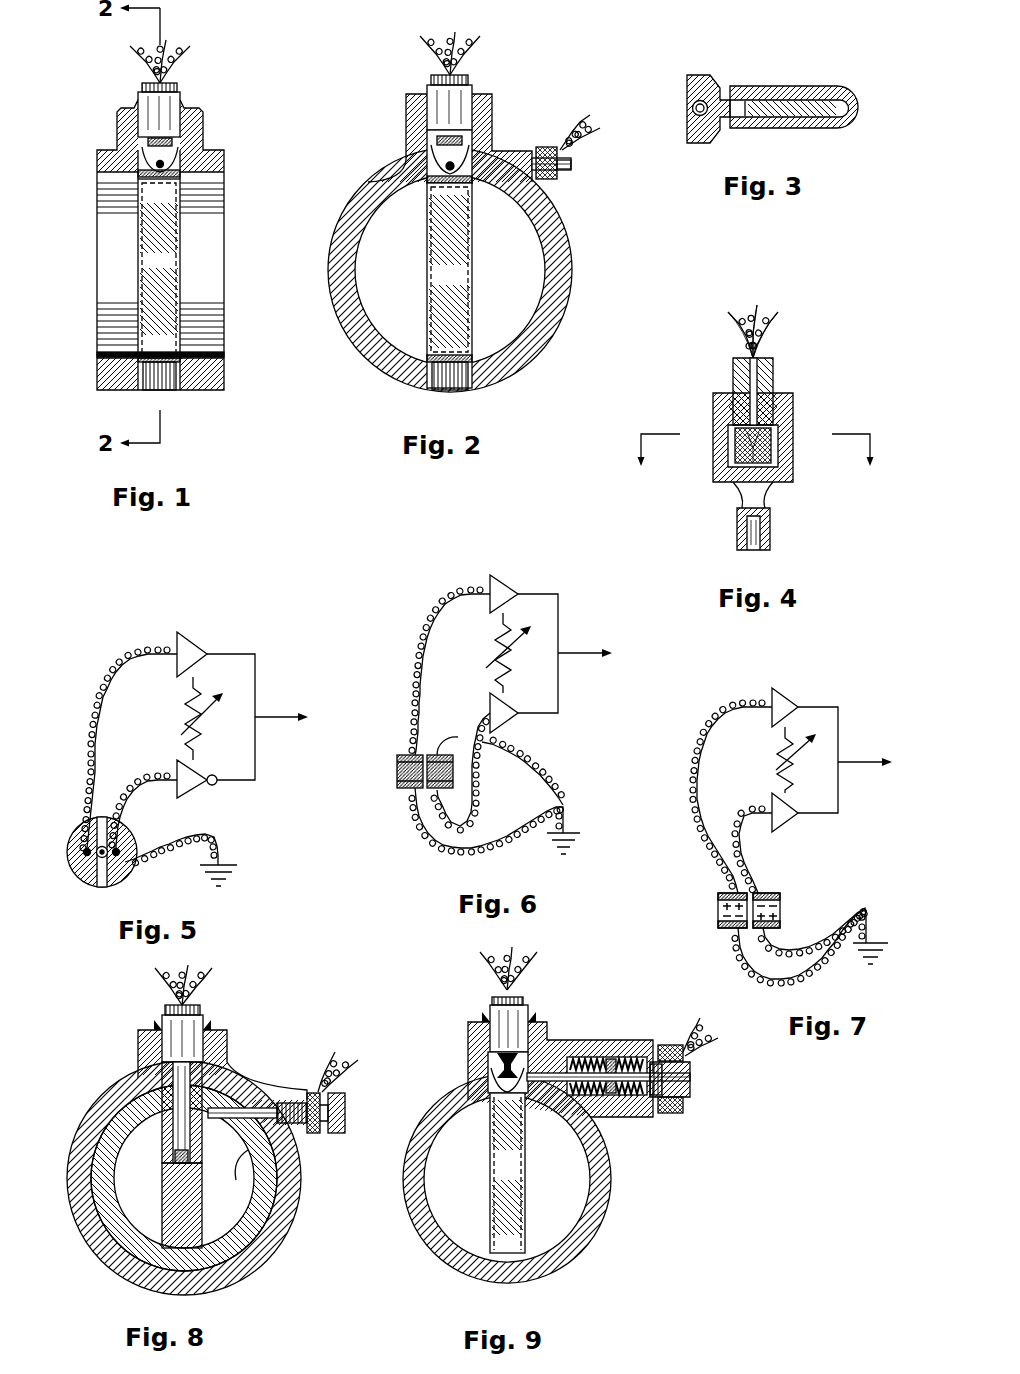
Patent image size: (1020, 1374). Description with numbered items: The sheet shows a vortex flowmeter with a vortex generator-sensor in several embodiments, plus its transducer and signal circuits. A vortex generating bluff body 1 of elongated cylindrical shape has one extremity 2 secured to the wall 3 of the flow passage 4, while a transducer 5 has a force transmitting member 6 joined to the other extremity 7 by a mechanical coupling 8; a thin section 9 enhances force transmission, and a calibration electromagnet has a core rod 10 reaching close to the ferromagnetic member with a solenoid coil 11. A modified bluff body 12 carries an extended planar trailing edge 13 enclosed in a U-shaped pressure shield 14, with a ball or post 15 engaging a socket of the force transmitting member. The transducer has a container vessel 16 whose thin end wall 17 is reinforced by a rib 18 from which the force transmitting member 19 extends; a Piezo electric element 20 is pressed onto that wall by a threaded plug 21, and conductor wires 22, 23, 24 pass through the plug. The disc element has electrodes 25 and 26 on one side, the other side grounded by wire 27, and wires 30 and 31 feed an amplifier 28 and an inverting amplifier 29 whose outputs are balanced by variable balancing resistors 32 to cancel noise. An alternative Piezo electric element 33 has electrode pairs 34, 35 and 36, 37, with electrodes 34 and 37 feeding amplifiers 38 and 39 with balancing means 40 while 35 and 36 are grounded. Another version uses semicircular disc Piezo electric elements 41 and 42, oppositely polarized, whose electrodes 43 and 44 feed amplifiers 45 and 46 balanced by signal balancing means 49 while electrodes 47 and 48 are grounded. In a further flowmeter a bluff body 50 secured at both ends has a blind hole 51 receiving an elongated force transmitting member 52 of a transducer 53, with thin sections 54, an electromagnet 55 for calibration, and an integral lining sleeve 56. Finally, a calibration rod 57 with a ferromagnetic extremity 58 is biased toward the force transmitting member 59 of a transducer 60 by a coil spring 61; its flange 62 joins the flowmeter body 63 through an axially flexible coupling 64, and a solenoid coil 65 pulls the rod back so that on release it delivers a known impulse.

In FIG. 1, the vortex generating bluff body 1 is at (158, 268).
In FIG. 2, the vortex generating bluff body 1 is at (438, 268).
In FIG. 1, the one extremity 2 is at (150, 340).
In FIG. 1, the wall 3 is at (196, 338).
In FIG. 1, the flow passage 4 is at (113, 246).
In FIG. 2, the flow passage 4 is at (518, 262).
In FIG. 1, the transducer 5 is at (150, 122).
In FIG. 2, the transducer 5 is at (445, 92).
In FIG. 4, the transducer 5 is at (755, 463).
In FIG. 1, the force transmitting member 6 is at (184, 160).
In FIG. 2, the force transmitting member 6 is at (440, 152).
In FIG. 1, the other extremity 7 is at (172, 212).
In FIG. 1, the mechanical coupling 8 is at (145, 172).
In FIG. 2, the mechanical coupling 8 is at (432, 170).
In FIG. 2, the thin section 9 is at (472, 345).
In FIG. 2, the core rod 10 is at (508, 160).
In FIG. 2, the solenoid coil 11 is at (548, 150).
In FIG. 3, the bluff body 12 is at (690, 108).
In FIG. 3, the extended planar trailing edge 13 is at (786, 104).
In FIG. 3, the pressure shield 14 is at (828, 88).
In FIG. 3, the ball or post 15 is at (706, 104).
In FIG. 4, the container vessel 16 is at (713, 412).
In FIG. 4, the thin end wall 17 is at (735, 492).
In FIG. 4, the rib 18 is at (770, 492).
In FIG. 4, the force transmitting member 19 is at (772, 530).
In FIG. 4, the Piezo electric element 20 is at (788, 442).
In FIG. 5, the Piezo electric element 20 is at (102, 887).
In FIG. 4, the plug 21 is at (733, 376).
In FIG. 4, the conductor wire 22 is at (728, 330).
In FIG. 4, the conductor wire 23 is at (775, 320).
In FIG. 4, the conductor wire 24 is at (755, 332).
In FIG. 5, the electrode 25 is at (70, 850).
In FIG. 5, the electrode 26 is at (185, 845).
In FIG. 5, the wire 27 is at (176, 862).
In FIG. 5, the amplifier 28 is at (193, 650).
In FIG. 5, the inverting amplifier 29 is at (200, 788).
In FIG. 5, the wire 30 is at (97, 690).
In FIG. 5, the wire 31 is at (88, 790).
In FIG. 5, the variable balancing resistors 32 is at (214, 690).
In FIG. 6, the Piezo electric element 33 is at (397, 771).
In FIG. 6, the electrode 34 is at (412, 752).
In FIG. 6, the electrode 35 is at (422, 660).
In FIG. 6, the electrode 36 is at (415, 792).
In FIG. 6, the electrode 37 is at (432, 822).
In FIG. 6, the amplifier 38 is at (512, 603).
In FIG. 6, the amplifier 39 is at (526, 720).
In FIG. 6, the balancing means 40 is at (560, 625).
In FIG. 7, the semicircular disc Piezo electric element 41 is at (718, 910).
In FIG. 7, the semicircular disc Piezo electric element 42 is at (782, 900).
In FIG. 7, the electrode 43 is at (738, 890).
In FIG. 7, the electrode 44 is at (770, 876).
In FIG. 7, the amplifier 45 is at (790, 696).
In FIG. 7, the amplifier 46 is at (812, 826).
In FIG. 7, the electrode 47 is at (735, 936).
In FIG. 7, the electrode 48 is at (800, 922).
In FIG. 7, the signal balancing means 49 is at (840, 735).
In FIG. 8, the bluff body 50 is at (104, 1226).
In FIG. 8, the blind hole 51 is at (152, 1104).
In FIG. 8, the elongated force transmitting member 52 is at (168, 1108).
In FIG. 8, the transducer 53 is at (188, 1040).
In FIG. 8, the thin sections 54 is at (222, 1200).
In FIG. 8, the electromagnet 55 is at (310, 1100).
In FIG. 8, the lining sleeve 56 is at (252, 1178).
In FIG. 9, the rod 57 is at (549, 1086).
In FIG. 9, the ferromagnetic extremity 58 is at (688, 1076).
In FIG. 9, the force transmitting member 59 is at (494, 1082).
In FIG. 9, the transducer 60 is at (500, 1025).
In FIG. 9, the coil spring 61 is at (612, 1098).
In FIG. 9, the flange 62 is at (612, 1044).
In FIG. 9, the flowmeter body 63 is at (546, 1108).
In FIG. 9, the axially flexible coupling 64 is at (608, 1068).
In FIG. 9, the solenoid coil 65 is at (676, 1112).